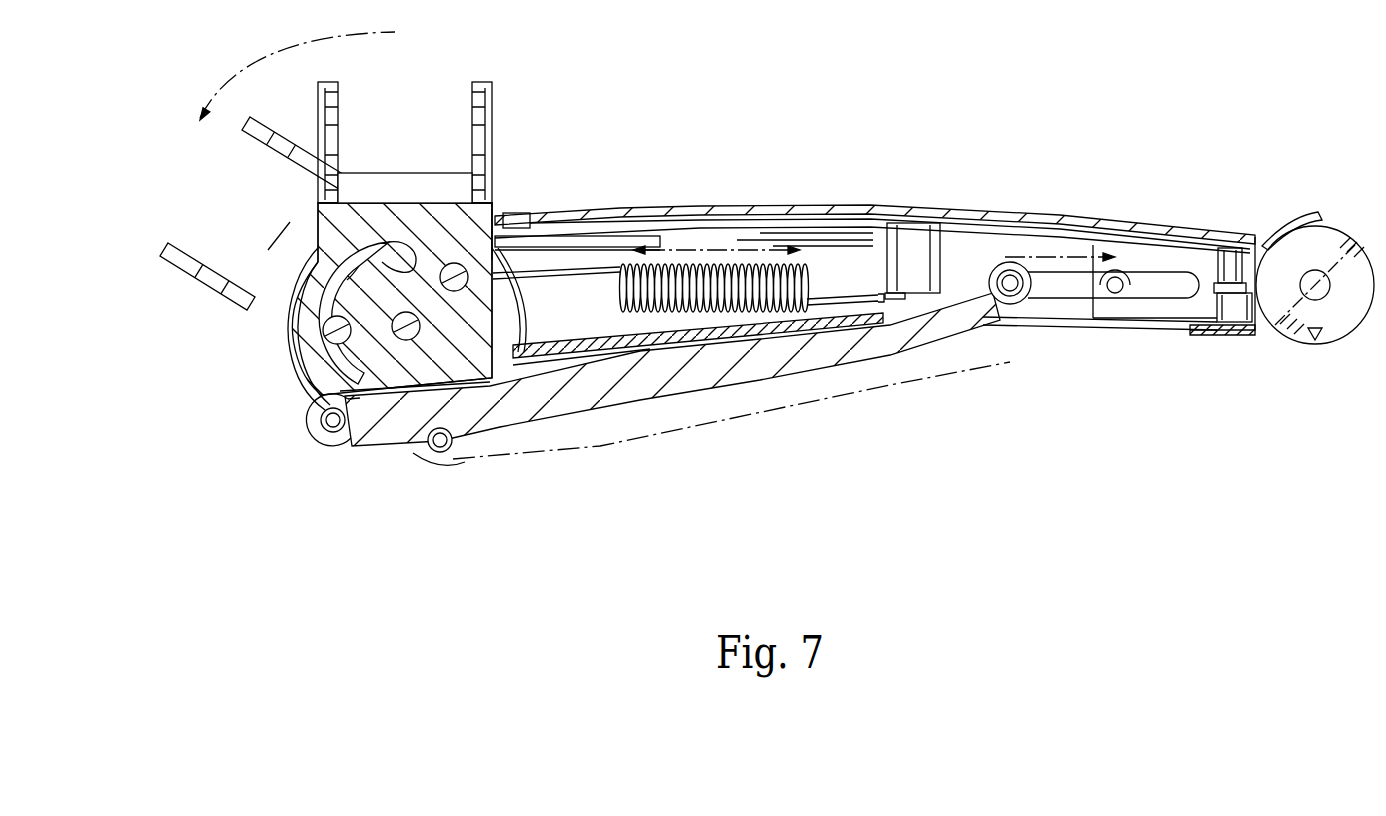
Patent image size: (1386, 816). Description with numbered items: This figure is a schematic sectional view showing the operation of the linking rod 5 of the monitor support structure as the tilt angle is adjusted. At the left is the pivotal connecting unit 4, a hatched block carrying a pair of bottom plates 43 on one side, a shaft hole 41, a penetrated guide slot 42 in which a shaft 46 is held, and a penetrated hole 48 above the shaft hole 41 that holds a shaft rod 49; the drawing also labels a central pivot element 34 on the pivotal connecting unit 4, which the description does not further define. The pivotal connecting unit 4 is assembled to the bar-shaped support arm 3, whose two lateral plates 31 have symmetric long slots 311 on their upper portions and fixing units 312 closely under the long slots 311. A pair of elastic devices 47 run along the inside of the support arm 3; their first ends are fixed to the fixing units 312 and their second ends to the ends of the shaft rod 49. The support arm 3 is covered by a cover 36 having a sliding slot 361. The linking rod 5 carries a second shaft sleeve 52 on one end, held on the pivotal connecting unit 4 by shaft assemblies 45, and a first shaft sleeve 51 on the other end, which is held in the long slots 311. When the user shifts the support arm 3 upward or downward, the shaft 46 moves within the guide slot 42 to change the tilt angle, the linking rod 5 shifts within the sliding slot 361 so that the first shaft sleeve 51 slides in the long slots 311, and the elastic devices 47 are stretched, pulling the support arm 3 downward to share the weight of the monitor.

The support arm 3 is at (863, 210).
The lateral plates 31 is at (1047, 212).
The long slots 311 is at (1095, 290).
The fixing units 312 is at (918, 250).
The pivot shaft 34 is at (393, 328).
The cover 36 is at (1212, 337).
The sliding slot 361 is at (1018, 300).
The pivotal connecting unit 4 is at (323, 222).
The shaft hole 41 is at (350, 397).
The penetrated guide slot 42 is at (318, 272).
The bottom plates 43 is at (317, 120).
The shaft assemblies 45 is at (338, 428).
The shaft 46 is at (328, 340).
The elastic devices 47 is at (712, 290).
The penetrated hole 48 is at (472, 203).
The shaft rod 49 is at (467, 272).
The linking rod 5 is at (664, 400).
The first shaft sleeve 51 is at (1000, 288).
The second shaft sleeve 52 is at (325, 428).